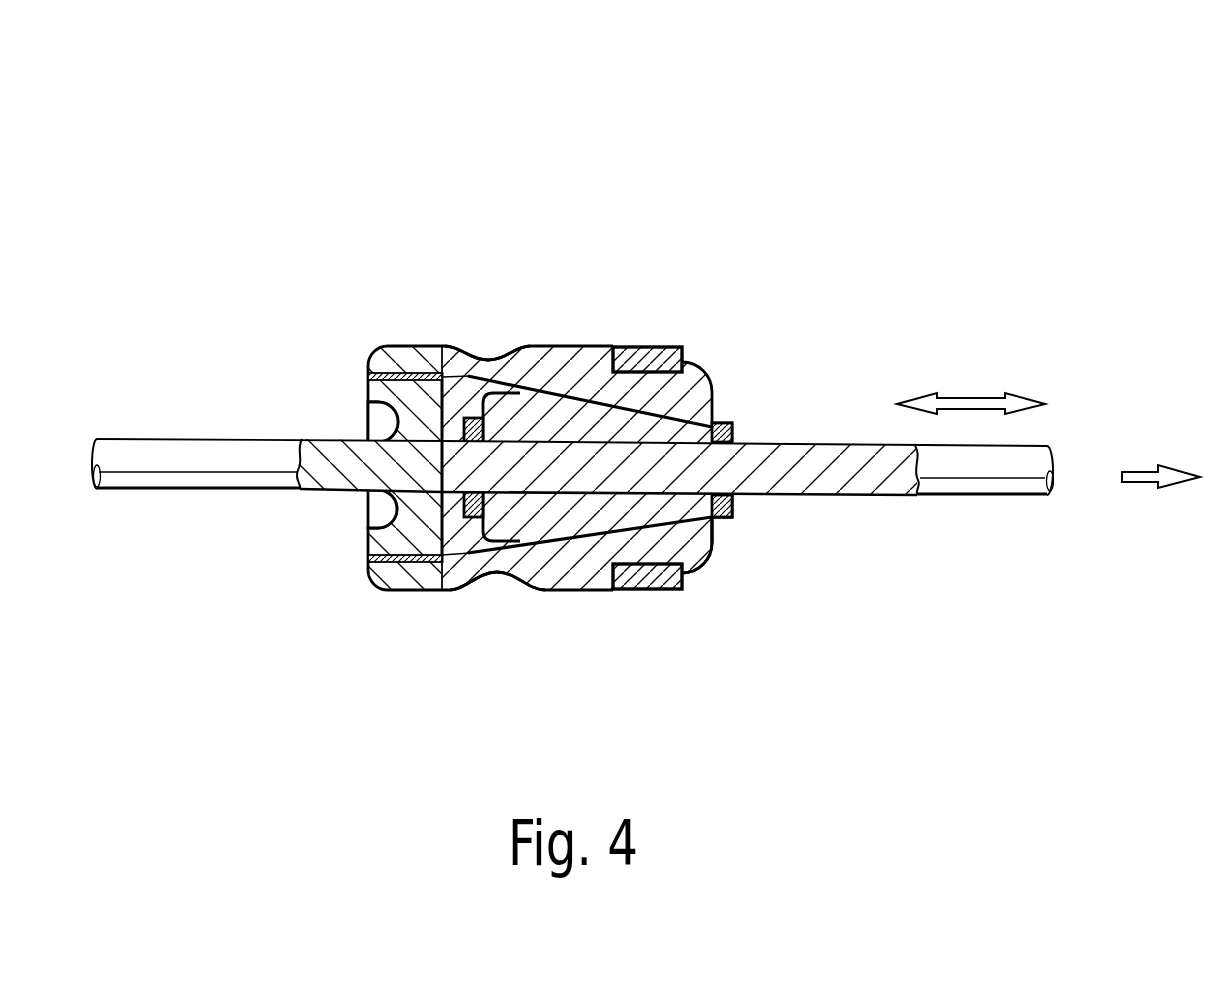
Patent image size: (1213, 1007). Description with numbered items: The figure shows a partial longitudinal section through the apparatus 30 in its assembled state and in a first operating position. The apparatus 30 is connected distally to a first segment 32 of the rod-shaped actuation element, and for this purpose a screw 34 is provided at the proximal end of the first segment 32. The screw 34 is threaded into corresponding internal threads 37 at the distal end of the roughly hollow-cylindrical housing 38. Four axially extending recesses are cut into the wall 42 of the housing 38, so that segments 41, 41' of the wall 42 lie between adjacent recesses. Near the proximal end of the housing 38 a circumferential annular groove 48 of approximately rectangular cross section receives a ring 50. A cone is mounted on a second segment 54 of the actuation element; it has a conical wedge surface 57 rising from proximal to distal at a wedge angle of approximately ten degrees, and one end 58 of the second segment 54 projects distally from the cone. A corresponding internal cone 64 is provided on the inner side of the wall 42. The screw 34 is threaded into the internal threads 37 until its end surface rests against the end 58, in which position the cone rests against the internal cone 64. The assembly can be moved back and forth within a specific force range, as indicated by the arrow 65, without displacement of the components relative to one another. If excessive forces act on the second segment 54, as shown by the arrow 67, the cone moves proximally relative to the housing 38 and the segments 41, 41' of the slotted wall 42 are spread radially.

The apparatus 30 is at (603, 222).
The first segment 32 is at (164, 474).
The screw 34 is at (403, 346).
The internal threads 37 is at (383, 563).
The housing 38 is at (453, 362).
The segment 41 is at (644, 441).
The segment 41' is at (749, 601).
The wall 42 is at (533, 565).
The annular groove 48 is at (690, 558).
The ring 50 is at (660, 346).
The second segment 54 is at (1018, 484).
The conical wedge surface 57 is at (598, 392).
The end 58 is at (462, 497).
The internal cone 64 is at (556, 393).
The arrow 65 is at (971, 403).
The arrow 67 is at (1137, 475).